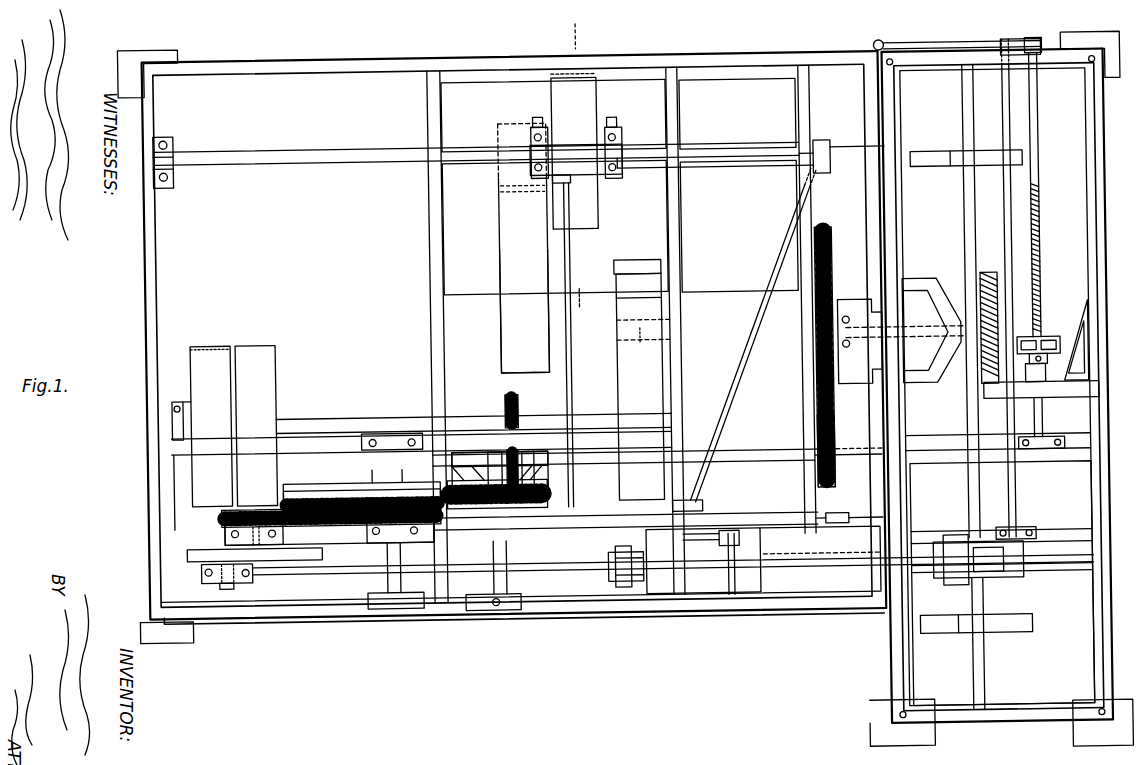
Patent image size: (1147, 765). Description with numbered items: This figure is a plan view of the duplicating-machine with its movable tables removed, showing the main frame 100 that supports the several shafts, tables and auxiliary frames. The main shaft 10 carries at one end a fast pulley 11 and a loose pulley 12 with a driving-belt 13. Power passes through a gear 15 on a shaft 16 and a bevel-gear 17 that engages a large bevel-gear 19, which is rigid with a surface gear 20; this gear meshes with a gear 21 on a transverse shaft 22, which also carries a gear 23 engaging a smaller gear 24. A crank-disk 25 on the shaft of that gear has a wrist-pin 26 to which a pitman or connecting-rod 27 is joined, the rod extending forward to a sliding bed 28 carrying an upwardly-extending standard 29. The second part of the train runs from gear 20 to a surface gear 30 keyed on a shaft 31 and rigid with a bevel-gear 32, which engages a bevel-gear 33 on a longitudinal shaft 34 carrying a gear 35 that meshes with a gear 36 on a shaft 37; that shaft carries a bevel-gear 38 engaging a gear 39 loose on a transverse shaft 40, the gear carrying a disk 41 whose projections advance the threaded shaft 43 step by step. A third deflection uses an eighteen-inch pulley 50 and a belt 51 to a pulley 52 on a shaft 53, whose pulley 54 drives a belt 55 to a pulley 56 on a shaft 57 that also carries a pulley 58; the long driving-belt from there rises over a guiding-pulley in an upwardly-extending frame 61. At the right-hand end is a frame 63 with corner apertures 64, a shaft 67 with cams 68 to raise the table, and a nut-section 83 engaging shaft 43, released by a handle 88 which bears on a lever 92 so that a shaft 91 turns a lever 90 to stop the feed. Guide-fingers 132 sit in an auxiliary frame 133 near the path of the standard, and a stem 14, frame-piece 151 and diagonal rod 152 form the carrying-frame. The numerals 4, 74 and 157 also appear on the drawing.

The main frame 100 is at (340, 68).
The auxiliary frame 133 is at (745, 160).
The shaft 57 is at (476, 152).
The frame-piece 151 is at (740, 170).
The connecting rod 157 is at (850, 150).
The six-inch pulley 56 is at (619, 186).
The pulley 58 is at (602, 96).
The section line 4 is at (577, 256).
The upwardly-extending frame 61 is at (568, 150).
The belt 55 is at (500, 200).
The eighteen-inch pulley 54 is at (500, 262).
The six-inch pulley 52 is at (614, 269).
The eighteen-inch pulley 50 is at (617, 381).
The belt 51 is at (616, 335).
The shaft 53 is at (617, 307).
The rod 152 is at (744, 339).
The main shaft 10 is at (362, 416).
The bevel-gear 33 is at (422, 462).
The longitudinal shaft 34 is at (657, 448).
The fast pulley 11 is at (211, 426).
The loose pulley 12 is at (256, 426).
The driving-belt 13 is at (212, 341).
The bevel-gear 19 is at (337, 481).
The gear 24 is at (219, 512).
The surface gear 20 is at (278, 498).
The gear 21 is at (368, 469).
The transverse shaft 22 is at (404, 468).
The gear 23 is at (329, 532).
The stem 14 is at (503, 405).
The gear 15 is at (522, 450).
The shaft 16 is at (500, 476).
The bevel-gear 17 is at (507, 475).
The bevel-gear 32 is at (547, 488).
The surface gear 30 is at (472, 508).
The shaft 31 is at (506, 508).
The bed 28 is at (520, 556).
The standard 29 is at (717, 562).
The rod 74 is at (821, 556).
The pitman or connecting-rod 27 is at (338, 574).
The crank-disk 25 is at (322, 552).
The wrist-pin 26 is at (224, 586).
The guide-fingers 132 is at (845, 518).
The gear 36 is at (834, 262).
The gear 35 is at (836, 452).
The frame 63 is at (1104, 148).
The apertures 64 is at (902, 718).
The bevel-gear 38 is at (983, 301).
The shaft 91 is at (1006, 206).
The threaded shaft 43 is at (1042, 240).
The lever arm or handle 88 is at (925, 48).
The lever 92 is at (1010, 48).
The cams 68 is at (934, 158).
The shaft 37 is at (932, 330).
The gear 39 is at (1000, 407).
The nut-section 83 is at (1024, 344).
The transverse shaft 40 is at (1036, 436).
The disk 41 is at (1080, 406).
The lever 90 is at (987, 542).
The shaft 67 is at (980, 600).